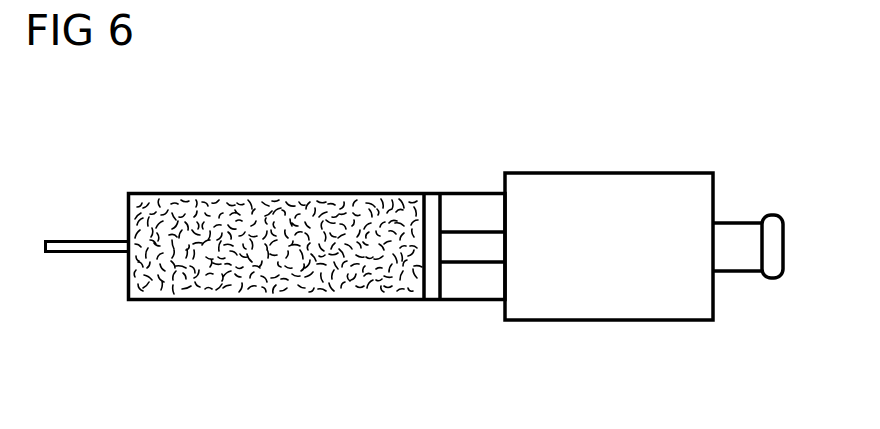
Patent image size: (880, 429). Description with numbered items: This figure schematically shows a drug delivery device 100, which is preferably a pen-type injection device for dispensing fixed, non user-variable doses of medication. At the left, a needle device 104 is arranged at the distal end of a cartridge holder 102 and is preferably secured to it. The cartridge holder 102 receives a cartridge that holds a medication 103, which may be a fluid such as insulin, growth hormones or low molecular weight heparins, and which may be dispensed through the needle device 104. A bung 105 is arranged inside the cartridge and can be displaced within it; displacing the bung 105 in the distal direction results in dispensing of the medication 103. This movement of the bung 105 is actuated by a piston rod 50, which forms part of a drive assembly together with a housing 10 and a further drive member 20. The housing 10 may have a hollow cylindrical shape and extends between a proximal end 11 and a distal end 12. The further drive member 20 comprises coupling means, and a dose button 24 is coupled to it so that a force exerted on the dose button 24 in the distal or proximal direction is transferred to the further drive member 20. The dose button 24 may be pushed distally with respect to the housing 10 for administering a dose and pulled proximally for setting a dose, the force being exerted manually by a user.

The housing 10 is at (607, 173).
The proximal end 11 is at (760, 136).
The distal end 12 is at (85, 215).
The further drive member 20 is at (740, 232).
The dose button 24 is at (770, 262).
The piston rod 50 is at (466, 238).
The drug delivery device 100 is at (190, 162).
The cartridge holder 102 is at (200, 302).
The medication 103 is at (332, 302).
The needle device 104 is at (80, 253).
The bung 105 is at (432, 302).